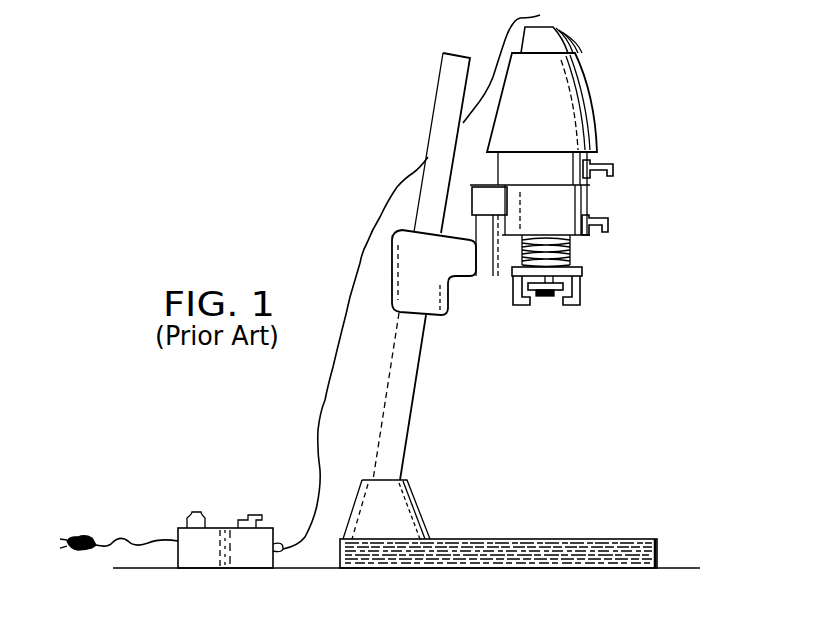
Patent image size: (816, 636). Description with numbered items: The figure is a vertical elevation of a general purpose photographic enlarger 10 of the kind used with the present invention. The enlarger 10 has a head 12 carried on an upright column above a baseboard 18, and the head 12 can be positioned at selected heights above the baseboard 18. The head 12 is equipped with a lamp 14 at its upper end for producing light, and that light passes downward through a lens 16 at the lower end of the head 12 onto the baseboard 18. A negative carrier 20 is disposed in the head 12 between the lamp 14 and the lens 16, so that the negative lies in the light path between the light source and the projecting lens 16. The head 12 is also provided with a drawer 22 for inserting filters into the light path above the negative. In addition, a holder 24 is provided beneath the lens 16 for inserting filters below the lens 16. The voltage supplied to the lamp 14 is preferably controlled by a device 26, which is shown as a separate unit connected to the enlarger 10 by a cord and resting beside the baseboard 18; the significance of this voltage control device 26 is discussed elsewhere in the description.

The photographic enlarger 10 is at (632, 406).
The head 12 is at (624, 189).
The lamp 14 is at (550, 28).
The lens 16 is at (550, 297).
The baseboard 18 is at (587, 539).
The negative carrier 20 is at (594, 230).
The drawer 22 is at (608, 156).
The holder 24 is at (583, 300).
The device 26 is at (225, 528).